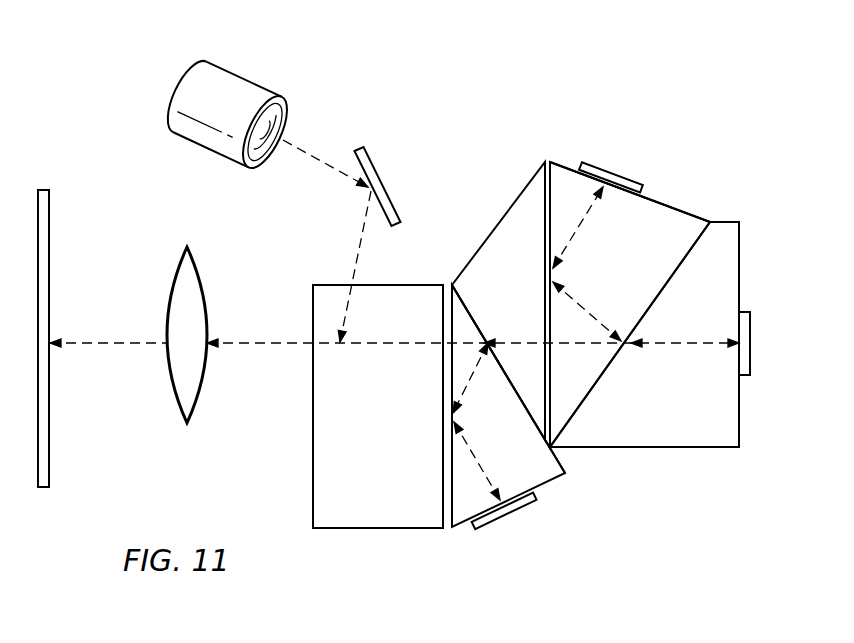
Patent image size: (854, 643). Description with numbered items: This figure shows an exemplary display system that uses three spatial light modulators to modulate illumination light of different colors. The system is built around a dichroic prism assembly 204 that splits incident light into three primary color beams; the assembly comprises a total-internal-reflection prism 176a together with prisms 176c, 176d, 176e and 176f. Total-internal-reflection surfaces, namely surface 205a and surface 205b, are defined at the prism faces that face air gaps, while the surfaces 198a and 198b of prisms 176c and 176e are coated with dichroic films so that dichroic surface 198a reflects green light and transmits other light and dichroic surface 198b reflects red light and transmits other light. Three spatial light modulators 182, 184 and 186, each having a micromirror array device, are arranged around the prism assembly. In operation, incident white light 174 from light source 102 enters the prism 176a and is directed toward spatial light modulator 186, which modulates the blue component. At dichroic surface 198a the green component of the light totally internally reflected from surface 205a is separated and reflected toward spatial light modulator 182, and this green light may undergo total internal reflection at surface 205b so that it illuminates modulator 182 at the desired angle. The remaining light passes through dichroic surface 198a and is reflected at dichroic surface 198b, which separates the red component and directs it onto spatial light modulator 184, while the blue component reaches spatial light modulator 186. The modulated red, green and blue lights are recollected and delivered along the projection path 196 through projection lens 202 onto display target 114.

The light source 102 is at (243, 77).
The display target 114 is at (50, 252).
The incident white light 174 is at (323, 165).
The TIR prism 176a is at (403, 467).
The prism 176c is at (537, 457).
The prism 176d is at (530, 295).
The prism 176e is at (645, 267).
The prism 176f is at (688, 407).
The spatial light modulator 182 is at (527, 516).
The spatial light modulator 184 is at (629, 178).
The spatial light modulator 186 is at (750, 358).
The projection light path 196 is at (263, 345).
The dichroic surface 198a is at (563, 462).
The dichroic surface 198b is at (693, 216).
The projection lens 202 is at (186, 426).
The dichroic prism assembly 204 is at (627, 338).
The TIR surface 205a is at (453, 500).
The TIR surface 205b is at (567, 168).